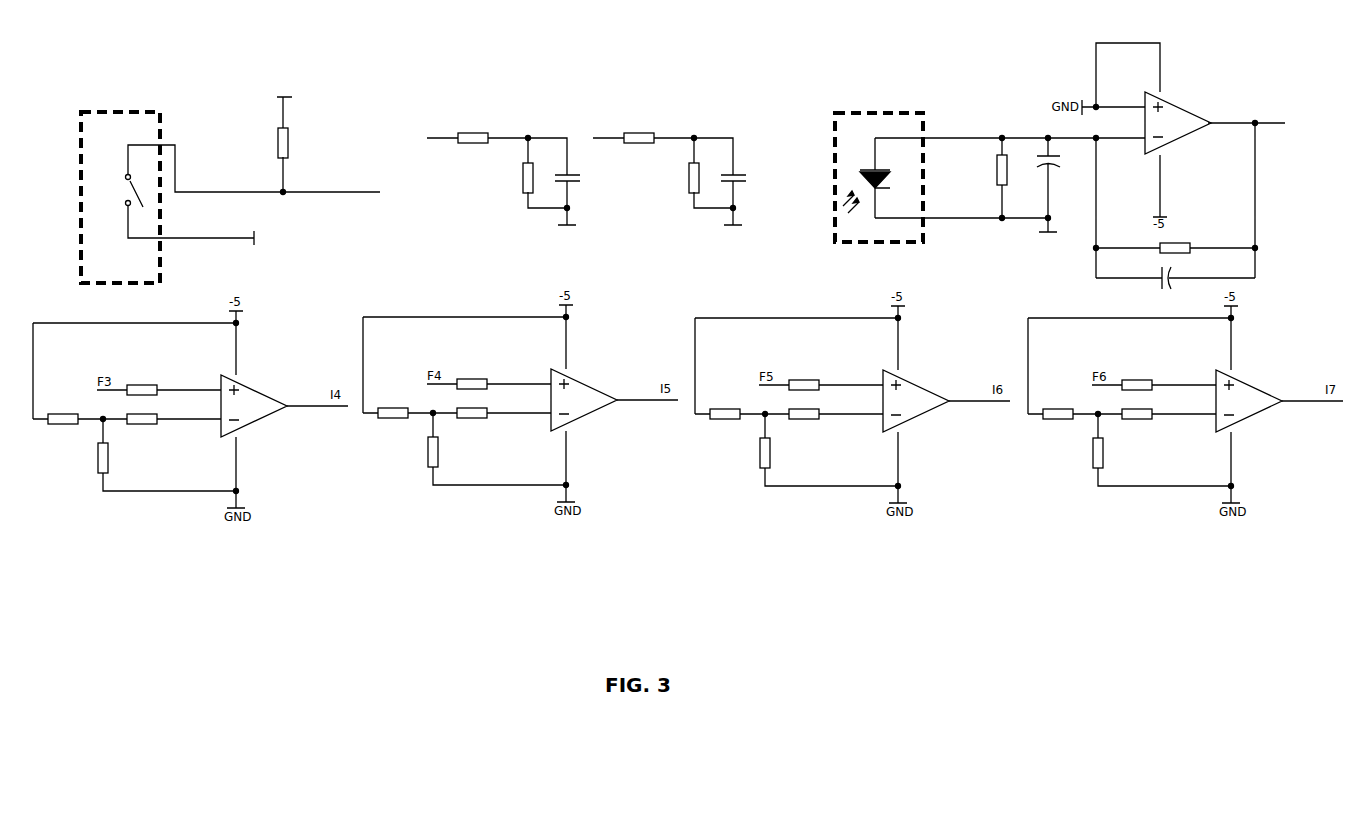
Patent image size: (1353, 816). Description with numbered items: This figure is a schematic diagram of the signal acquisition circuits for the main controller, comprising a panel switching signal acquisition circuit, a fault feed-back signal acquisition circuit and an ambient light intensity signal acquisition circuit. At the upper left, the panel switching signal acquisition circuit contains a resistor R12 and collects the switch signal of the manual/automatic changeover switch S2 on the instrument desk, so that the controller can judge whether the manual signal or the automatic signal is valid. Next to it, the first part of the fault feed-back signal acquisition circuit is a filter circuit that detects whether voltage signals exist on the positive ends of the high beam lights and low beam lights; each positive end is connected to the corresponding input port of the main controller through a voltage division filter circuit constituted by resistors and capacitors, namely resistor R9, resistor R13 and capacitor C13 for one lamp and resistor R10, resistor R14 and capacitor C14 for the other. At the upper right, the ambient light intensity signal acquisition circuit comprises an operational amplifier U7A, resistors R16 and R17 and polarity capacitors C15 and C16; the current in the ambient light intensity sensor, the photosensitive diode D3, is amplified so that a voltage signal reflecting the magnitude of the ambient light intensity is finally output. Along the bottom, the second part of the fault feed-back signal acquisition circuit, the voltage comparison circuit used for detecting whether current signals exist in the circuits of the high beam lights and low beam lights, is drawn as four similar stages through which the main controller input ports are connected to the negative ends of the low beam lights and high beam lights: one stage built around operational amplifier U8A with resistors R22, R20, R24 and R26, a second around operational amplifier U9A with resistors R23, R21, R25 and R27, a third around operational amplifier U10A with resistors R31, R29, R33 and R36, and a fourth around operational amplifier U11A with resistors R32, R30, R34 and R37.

The manual/automatic changeover switch S2 is at (230, 197).
The resistor R12 is at (296, 136).
The resistor R9 is at (477, 129).
The resistor R13 is at (545, 172).
The capacitor C13 is at (567, 180).
The resistor R10 is at (643, 129).
The resistor R14 is at (711, 172).
The capacitor C14 is at (733, 180).
The photosensitive diode D3 is at (879, 177).
The resistor R16 is at (1015, 178).
The polarity capacitor C15 is at (1061, 193).
The operational amplifier U7A is at (1205, 140).
The resistor R17 is at (1175, 241).
The polarity capacitor C16 is at (1158, 269).
The input resistor R22 is at (68, 411).
The input resistor R20 is at (162, 411).
The input resistor R24 is at (159, 414).
The resistor to ground R26 is at (115, 458).
The operational amplifier U8A is at (275, 427).
The input resistor R23 is at (398, 405).
The input resistor R21 is at (492, 405).
The input resistor R25 is at (489, 408).
The resistor to ground R27 is at (445, 452).
The operational amplifier U9A is at (605, 421).
The input resistor R31 is at (730, 406).
The input resistor R29 is at (824, 406).
The input resistor R33 is at (821, 409).
The resistor to ground R36 is at (777, 453).
The operational amplifier U10A is at (937, 422).
The input resistor R32 is at (1063, 406).
The input resistor R30 is at (1157, 406).
The input resistor R34 is at (1154, 409).
The resistor to ground R37 is at (1110, 453).
The operational amplifier U11A is at (1270, 422).